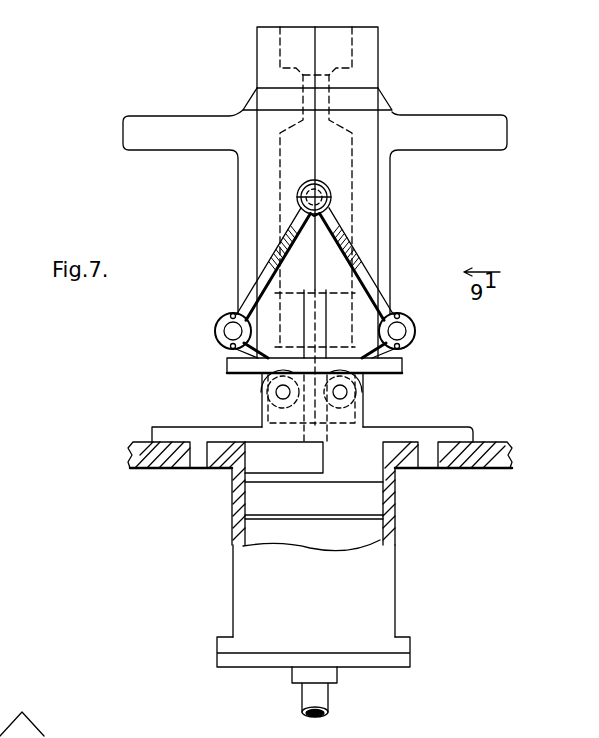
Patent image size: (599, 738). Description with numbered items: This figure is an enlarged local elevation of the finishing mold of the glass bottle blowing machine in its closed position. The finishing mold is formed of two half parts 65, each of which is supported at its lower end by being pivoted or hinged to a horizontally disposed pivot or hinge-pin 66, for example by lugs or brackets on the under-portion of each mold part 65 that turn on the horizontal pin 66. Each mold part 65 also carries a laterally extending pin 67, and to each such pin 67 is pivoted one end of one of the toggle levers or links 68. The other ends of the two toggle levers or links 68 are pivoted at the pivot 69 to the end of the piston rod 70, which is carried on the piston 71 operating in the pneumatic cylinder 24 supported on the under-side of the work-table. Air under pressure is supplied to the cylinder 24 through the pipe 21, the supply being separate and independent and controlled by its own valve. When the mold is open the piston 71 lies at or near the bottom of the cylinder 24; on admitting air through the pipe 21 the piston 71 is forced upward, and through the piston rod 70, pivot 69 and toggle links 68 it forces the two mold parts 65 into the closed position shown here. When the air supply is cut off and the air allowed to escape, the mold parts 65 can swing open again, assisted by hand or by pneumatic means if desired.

The finishing mold half part 65 is at (267, 56).
The pivot 69 is at (297, 196).
The toggle lever or link 68 is at (258, 272).
The laterally extending pin 67 is at (232, 333).
The horizontal pivot or hinge-pin 66 is at (282, 392).
The piston rod 70 is at (315, 452).
The piston 71 is at (372, 497).
The pneumatic cylinder 24 is at (313, 603).
The pipe 21 is at (328, 699).